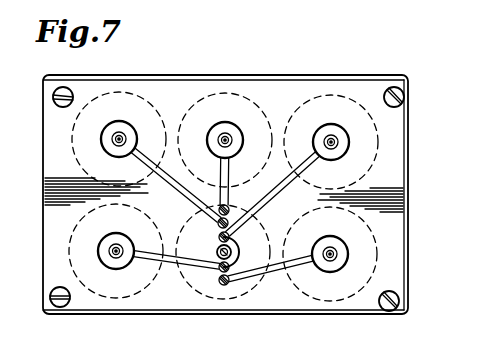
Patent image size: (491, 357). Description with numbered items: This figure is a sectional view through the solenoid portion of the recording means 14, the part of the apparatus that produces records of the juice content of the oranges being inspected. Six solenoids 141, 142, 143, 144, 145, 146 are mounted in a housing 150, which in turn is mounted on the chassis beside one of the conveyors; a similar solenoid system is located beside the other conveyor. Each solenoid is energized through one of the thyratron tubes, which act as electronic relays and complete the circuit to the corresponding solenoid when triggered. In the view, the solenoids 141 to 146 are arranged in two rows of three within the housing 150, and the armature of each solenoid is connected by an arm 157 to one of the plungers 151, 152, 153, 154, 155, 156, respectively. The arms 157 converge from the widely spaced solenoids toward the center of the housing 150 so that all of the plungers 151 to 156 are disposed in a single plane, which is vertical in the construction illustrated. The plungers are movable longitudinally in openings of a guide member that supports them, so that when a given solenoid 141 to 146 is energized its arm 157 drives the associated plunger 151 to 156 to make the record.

The recording means 14 is at (219, 91).
The solenoid 141 is at (305, 298).
The solenoid 142 is at (109, 297).
The solenoid 143 is at (217, 299).
The solenoid 144 is at (381, 143).
The solenoid 145 is at (130, 96).
The solenoid 146 is at (262, 107).
The housing 150 is at (378, 68).
The plunger 151 is at (219, 283).
The plunger 152 is at (239, 254).
The plunger 153 is at (218, 251).
The plunger 154 is at (241, 231).
The plunger 155 is at (228, 217).
The plunger 156 is at (221, 195).
The arms 157 is at (192, 212).